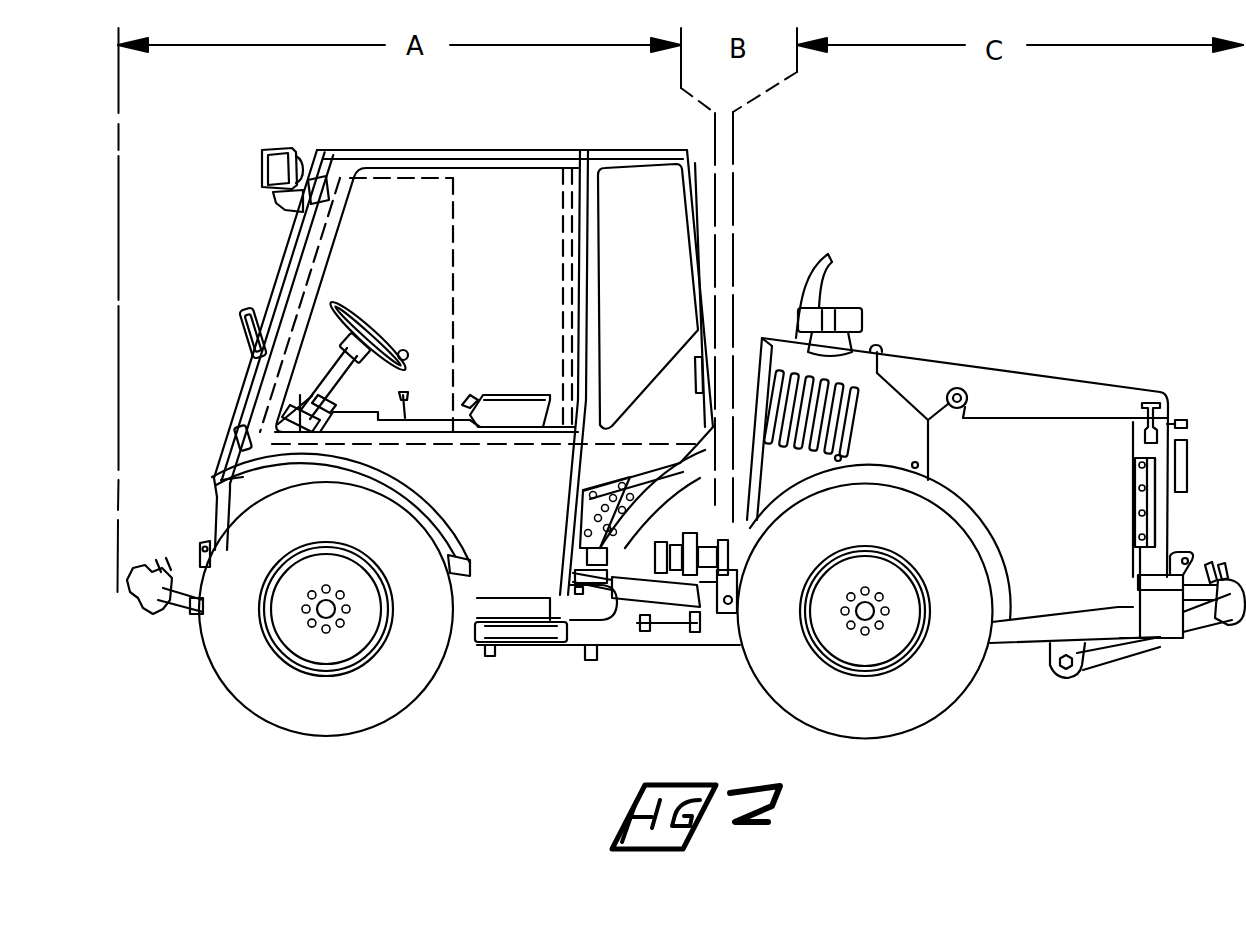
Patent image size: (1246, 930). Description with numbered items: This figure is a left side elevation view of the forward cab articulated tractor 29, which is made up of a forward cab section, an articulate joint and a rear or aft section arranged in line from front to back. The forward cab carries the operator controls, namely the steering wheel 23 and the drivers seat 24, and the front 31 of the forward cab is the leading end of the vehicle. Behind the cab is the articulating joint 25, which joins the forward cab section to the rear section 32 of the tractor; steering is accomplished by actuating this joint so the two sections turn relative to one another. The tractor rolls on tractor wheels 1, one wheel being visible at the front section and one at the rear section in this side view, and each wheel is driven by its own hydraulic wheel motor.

The tractor wheels 1 is at (410, 684).
The steering wheel 23 is at (345, 306).
The drivers seat 24 is at (560, 387).
The articulating joint 25 is at (620, 530).
The left side plan view of articulated tractor 29 is at (259, 257).
The front of forward cab of articulated tractor 31 is at (240, 373).
The rear or aft section of articulated tractor 32 is at (977, 367).